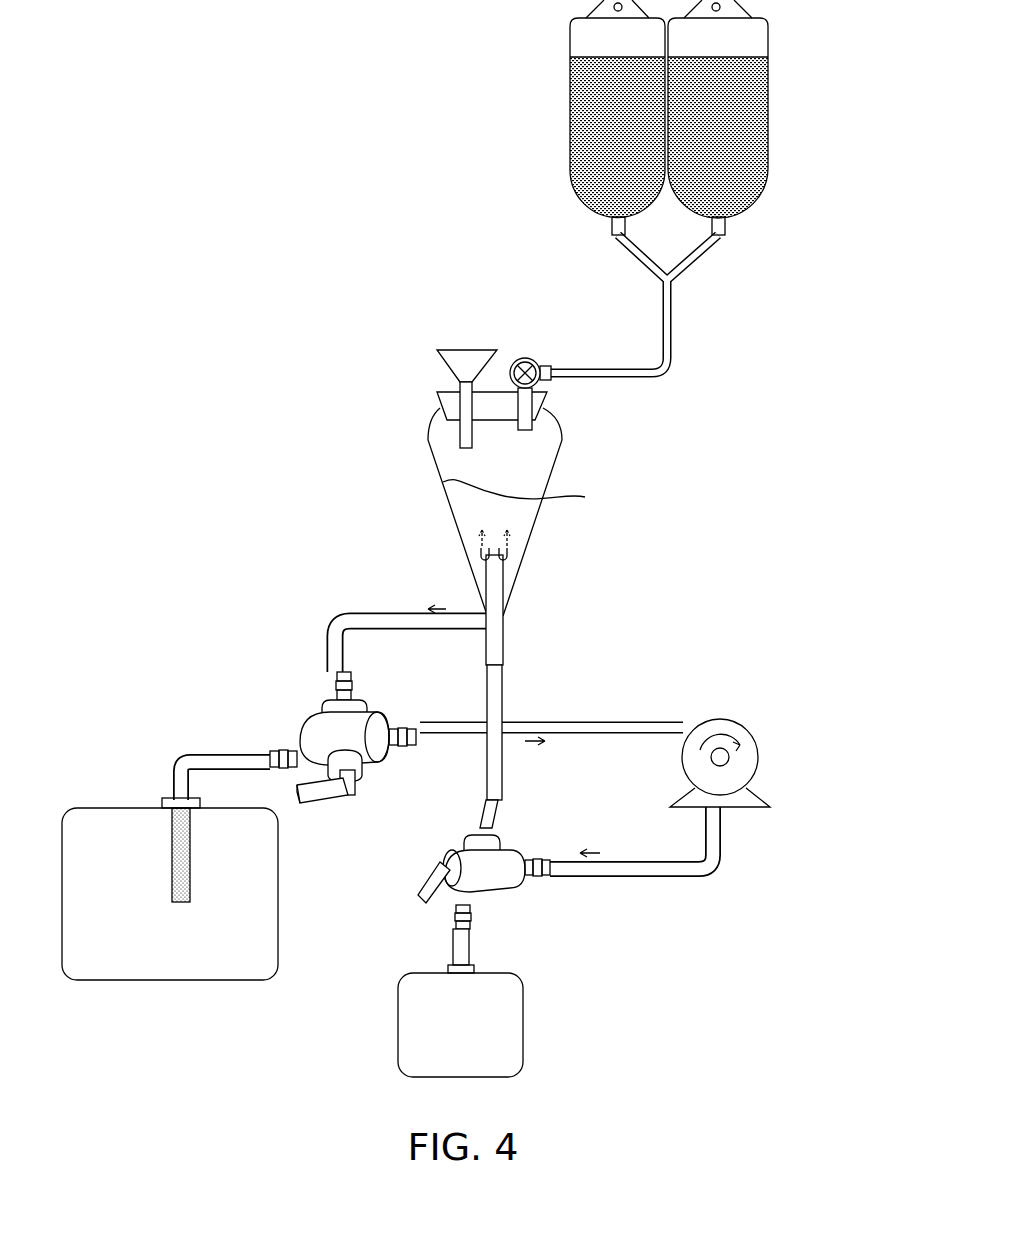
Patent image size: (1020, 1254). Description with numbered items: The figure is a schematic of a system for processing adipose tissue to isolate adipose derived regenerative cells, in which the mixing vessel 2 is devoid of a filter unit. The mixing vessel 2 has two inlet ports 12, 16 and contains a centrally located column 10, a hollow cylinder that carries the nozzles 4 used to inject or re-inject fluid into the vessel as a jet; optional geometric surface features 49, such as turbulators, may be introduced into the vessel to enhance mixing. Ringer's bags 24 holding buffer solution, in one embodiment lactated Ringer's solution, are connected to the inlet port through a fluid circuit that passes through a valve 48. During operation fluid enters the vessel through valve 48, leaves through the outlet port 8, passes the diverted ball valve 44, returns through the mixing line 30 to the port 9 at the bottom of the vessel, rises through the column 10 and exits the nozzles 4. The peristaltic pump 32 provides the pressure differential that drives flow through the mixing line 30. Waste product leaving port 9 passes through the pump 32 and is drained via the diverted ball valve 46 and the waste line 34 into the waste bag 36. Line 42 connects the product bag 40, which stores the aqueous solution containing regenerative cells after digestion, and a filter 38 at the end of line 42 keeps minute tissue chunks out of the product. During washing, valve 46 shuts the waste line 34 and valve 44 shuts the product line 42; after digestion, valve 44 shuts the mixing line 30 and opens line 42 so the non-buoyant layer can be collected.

The mixing vessel 2 is at (558, 424).
The nozzles 4 is at (510, 556).
The outlet port 8 is at (388, 612).
The port 9 is at (498, 667).
The column 10 is at (500, 595).
The inlet port 12 is at (527, 432).
The inlet port 16 is at (462, 350).
The Ringer's bags 24 is at (690, 146).
The mixing line 30 is at (612, 720).
The peristaltic pump 32 is at (742, 722).
The waste line 34 is at (470, 945).
The waste bag 36 is at (525, 1027).
The filter 38 is at (170, 860).
The product bag 40 is at (95, 808).
The product line 42 is at (196, 755).
The diverted ball valve 44 is at (308, 728).
The diverted ball valve 46 is at (455, 850).
The valve 48 is at (518, 361).
The surface features 49 is at (526, 494).